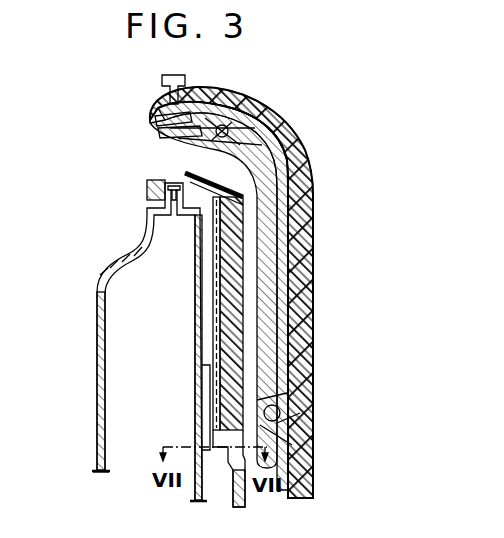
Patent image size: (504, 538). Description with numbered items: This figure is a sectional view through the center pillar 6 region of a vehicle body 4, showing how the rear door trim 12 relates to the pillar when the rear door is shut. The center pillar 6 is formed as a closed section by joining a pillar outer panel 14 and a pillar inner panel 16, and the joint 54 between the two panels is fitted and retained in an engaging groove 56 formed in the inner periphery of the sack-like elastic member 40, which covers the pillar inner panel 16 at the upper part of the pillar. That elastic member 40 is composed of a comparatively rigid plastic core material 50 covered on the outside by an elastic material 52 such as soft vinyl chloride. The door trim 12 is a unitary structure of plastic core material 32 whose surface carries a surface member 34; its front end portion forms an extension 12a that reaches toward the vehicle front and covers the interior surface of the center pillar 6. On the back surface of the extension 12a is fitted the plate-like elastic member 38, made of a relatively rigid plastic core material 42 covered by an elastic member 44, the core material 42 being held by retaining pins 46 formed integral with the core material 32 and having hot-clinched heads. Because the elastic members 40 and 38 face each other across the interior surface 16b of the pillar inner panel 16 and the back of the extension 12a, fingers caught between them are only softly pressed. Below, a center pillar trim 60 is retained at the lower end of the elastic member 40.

The aerosol dispenser 4 is at (64, 505).
The center pillar 6 is at (55, 347).
The door trim 12 is at (302, 132).
The extension 12a is at (300, 197).
The pillar outer panel 14 is at (97, 360).
The pillar inner panel 16 is at (195, 349).
The surface of pillar inner panel 16b is at (207, 370).
The plastic core material 32 is at (299, 246).
The surface member 34 is at (300, 343).
The elastic member 38 is at (72, 107).
The elastic member 40 is at (153, 283).
The plastic core material 42 is at (155, 122).
The elastic member 44 is at (172, 132).
The retaining pins 46 is at (224, 128).
The plastic core material 50 is at (213, 296).
The elastic material 52 is at (230, 318).
The joint 54 is at (174, 222).
The engaging groove 56 is at (147, 183).
The center pillar trim 60 is at (232, 493).